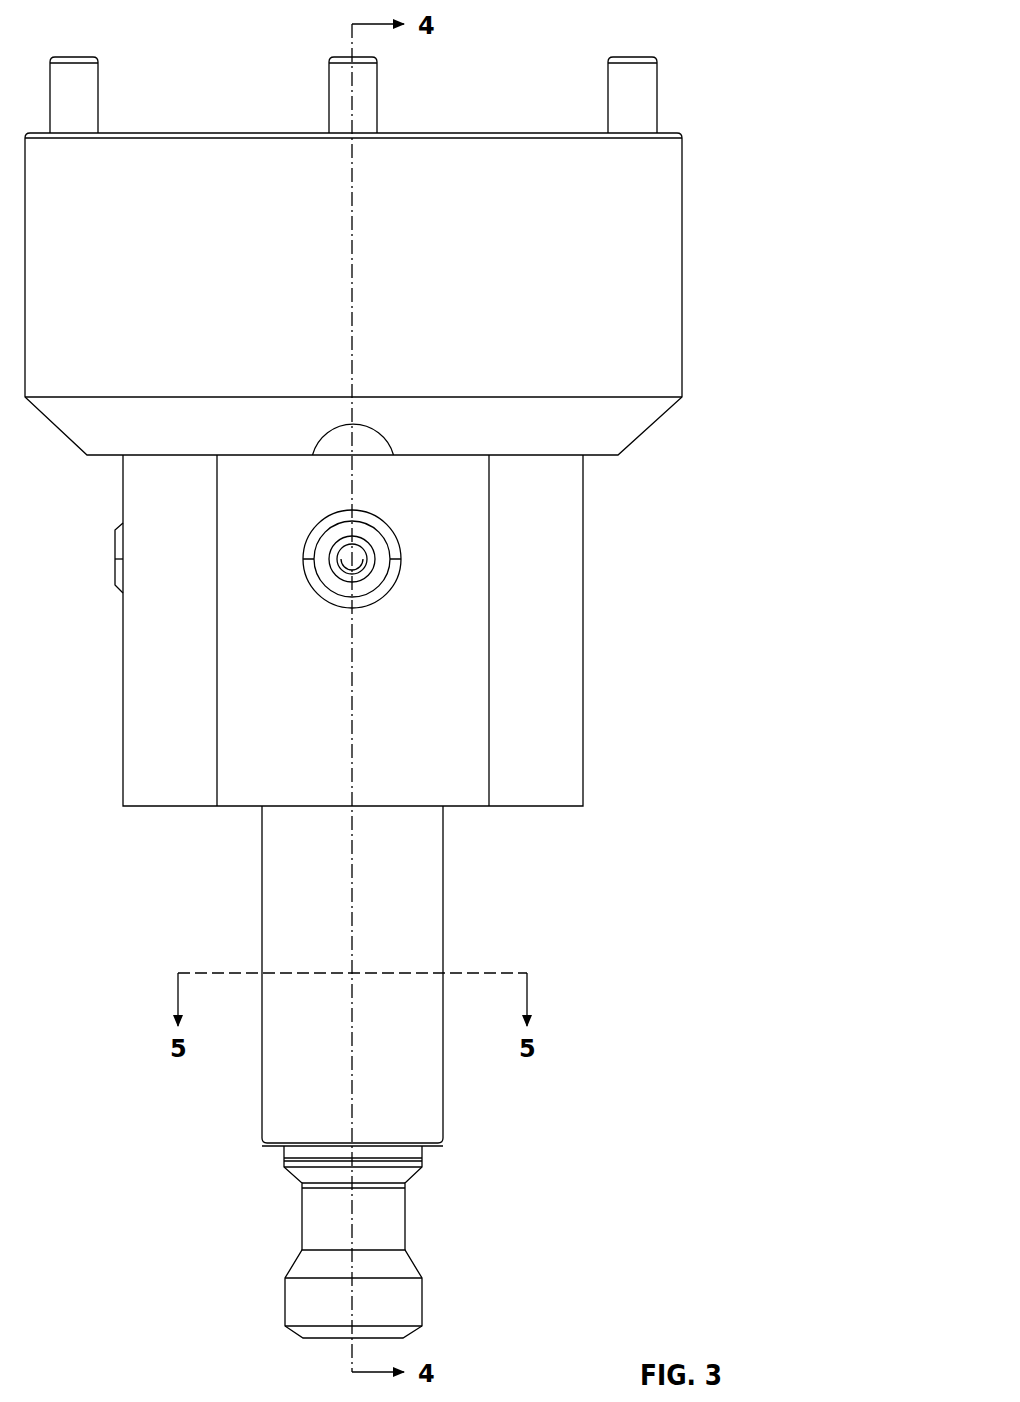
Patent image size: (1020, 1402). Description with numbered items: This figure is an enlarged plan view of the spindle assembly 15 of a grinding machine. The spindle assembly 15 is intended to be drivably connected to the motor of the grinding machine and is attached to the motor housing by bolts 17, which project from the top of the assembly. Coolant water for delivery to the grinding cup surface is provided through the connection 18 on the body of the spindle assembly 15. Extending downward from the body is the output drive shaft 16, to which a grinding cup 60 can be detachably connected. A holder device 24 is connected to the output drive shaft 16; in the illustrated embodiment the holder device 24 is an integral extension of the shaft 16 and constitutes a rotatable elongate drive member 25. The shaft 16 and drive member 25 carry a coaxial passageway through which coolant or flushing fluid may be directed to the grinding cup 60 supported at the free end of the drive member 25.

The spindle assembly 15 is at (566, 698).
The output drive shaft 16 is at (515, 1109).
The bolts 17 is at (643, 99).
The connection 18 is at (402, 560).
The holder device 24 is at (433, 853).
The rotatable elongate drive member 25 is at (266, 1117).
The grinding cup 60 is at (410, 1303).